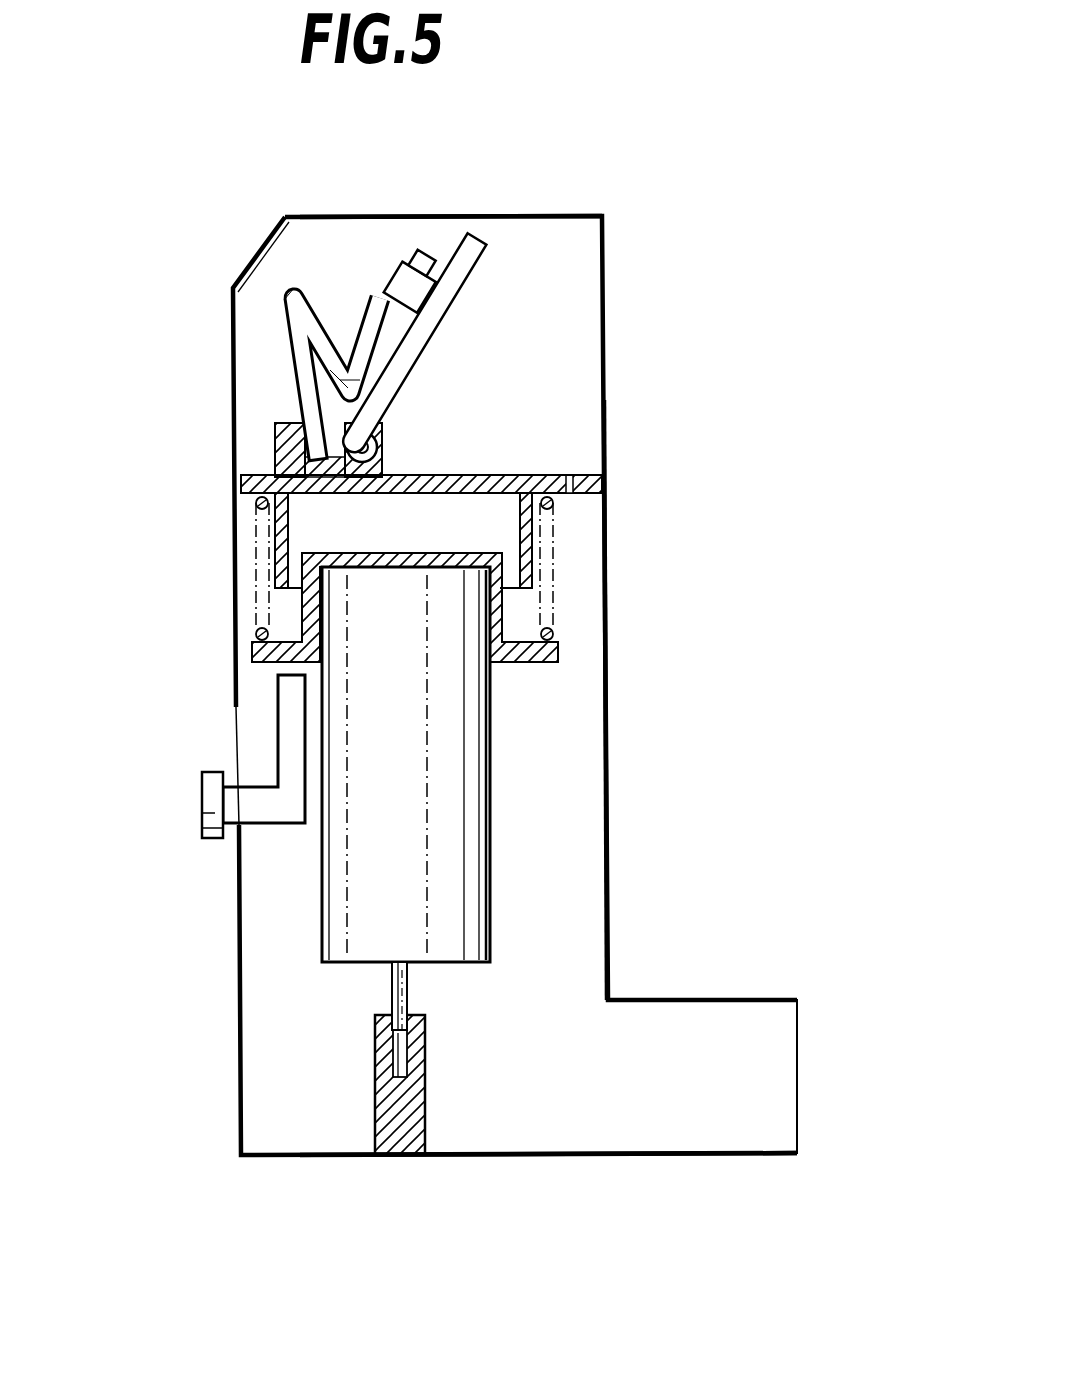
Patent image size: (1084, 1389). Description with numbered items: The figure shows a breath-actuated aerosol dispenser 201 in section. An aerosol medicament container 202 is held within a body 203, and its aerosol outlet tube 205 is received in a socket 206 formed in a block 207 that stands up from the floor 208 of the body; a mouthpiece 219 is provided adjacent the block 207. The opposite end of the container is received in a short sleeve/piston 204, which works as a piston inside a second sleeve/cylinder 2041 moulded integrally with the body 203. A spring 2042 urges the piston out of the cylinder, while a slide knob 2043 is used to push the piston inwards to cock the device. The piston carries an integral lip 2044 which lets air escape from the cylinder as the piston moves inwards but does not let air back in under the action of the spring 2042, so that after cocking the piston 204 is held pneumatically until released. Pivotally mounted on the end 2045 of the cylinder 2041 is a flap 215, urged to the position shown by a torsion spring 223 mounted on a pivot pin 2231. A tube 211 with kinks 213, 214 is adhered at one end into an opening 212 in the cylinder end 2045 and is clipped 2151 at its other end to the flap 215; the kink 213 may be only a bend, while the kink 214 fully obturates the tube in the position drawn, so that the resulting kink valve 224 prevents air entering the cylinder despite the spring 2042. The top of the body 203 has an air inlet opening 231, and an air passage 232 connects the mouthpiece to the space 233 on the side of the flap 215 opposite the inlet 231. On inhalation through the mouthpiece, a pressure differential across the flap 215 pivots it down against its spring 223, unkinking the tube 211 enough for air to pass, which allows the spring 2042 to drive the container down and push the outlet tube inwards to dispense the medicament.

The dispenser 201 is at (677, 335).
The aerosol medicament container 202 is at (450, 800).
The body 203 is at (608, 900).
The sleeve/piston 204 is at (308, 608).
The aerosol outlet tube 205 is at (393, 985).
The socket 206 is at (378, 1022).
The block 207 is at (400, 1130).
The floor 208 is at (597, 1158).
The tube 211 is at (297, 352).
The opening 212 is at (308, 440).
The kink 213 is at (287, 293).
The kink 214 is at (367, 310).
The flap 215 is at (472, 267).
The mouthpiece 219 is at (797, 1073).
The torsion spring 223 is at (381, 470).
The kink valve 224 is at (341, 311).
The air inlet opening 231 is at (272, 229).
The air passage 232 is at (562, 478).
The space 233 is at (570, 338).
The sleeve/cylinder 2041 is at (275, 558).
The spring 2042 is at (553, 610).
The slide knob 2043 is at (208, 797).
The lip 2044 is at (530, 562).
The end 2045 is at (500, 477).
The clip 2151 is at (391, 270).
The pivot pin 2231 is at (386, 426).